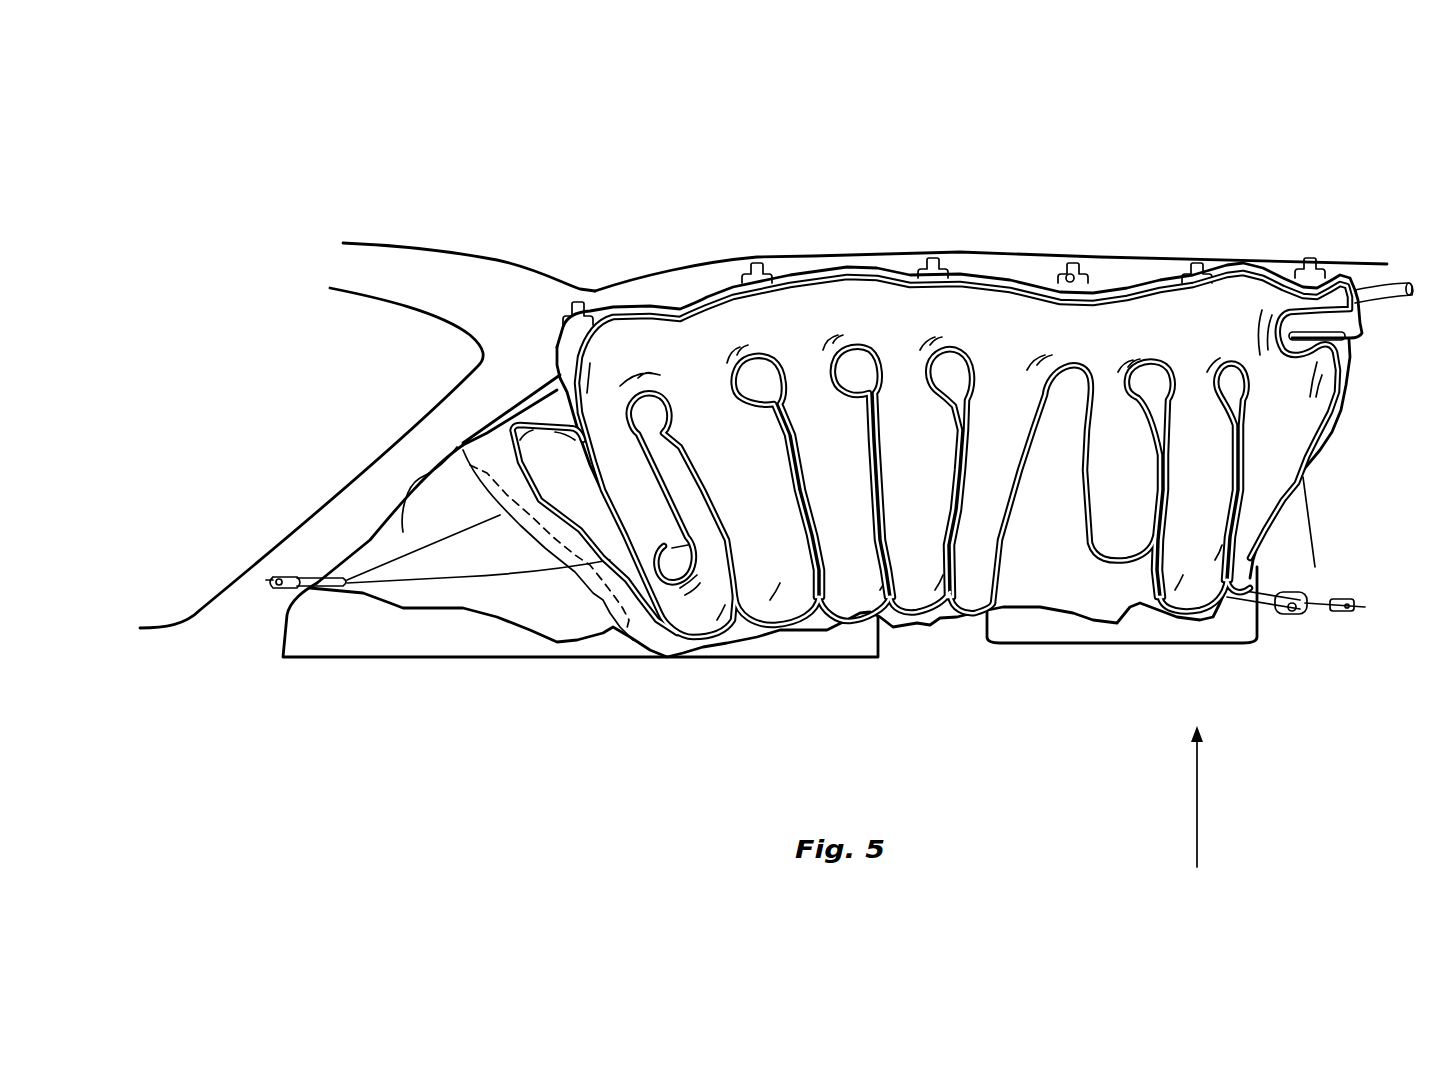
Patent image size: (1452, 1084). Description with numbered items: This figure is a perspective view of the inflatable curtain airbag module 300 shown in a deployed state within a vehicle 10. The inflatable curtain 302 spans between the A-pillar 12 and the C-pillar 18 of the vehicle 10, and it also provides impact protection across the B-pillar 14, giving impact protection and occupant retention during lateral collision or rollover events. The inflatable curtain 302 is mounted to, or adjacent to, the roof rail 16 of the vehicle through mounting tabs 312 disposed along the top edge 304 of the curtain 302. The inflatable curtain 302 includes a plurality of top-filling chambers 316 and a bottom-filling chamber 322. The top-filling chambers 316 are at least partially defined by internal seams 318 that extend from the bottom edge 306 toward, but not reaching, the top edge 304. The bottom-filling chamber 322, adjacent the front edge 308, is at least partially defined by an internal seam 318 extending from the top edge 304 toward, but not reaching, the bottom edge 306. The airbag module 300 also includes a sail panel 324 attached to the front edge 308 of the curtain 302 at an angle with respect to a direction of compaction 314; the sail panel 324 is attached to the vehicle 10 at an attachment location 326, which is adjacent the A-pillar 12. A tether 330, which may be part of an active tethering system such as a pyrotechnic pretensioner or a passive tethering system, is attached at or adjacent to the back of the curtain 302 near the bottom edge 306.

The vehicle 10 is at (250, 655).
The A-pillar 12 is at (438, 410).
The B-pillar 14 is at (937, 628).
The roof rail 16 is at (1008, 263).
The C-pillar 18 is at (1293, 520).
The inflatable curtain airbag module 300 is at (630, 238).
The inflatable curtain 302 is at (627, 645).
The top edge 304 is at (815, 272).
The bottom edge 306 is at (757, 650).
The front edge 308 is at (460, 478).
The mounting tabs 312 is at (1107, 262).
The direction of compaction 314 is at (1200, 800).
The top-filling chambers 316 is at (1207, 467).
The internal seams 318 is at (873, 480).
The bottom-filling chamber 322 is at (567, 503).
The sail panel 324 is at (403, 530).
The attachment location 326 is at (290, 578).
The tether 330 is at (1273, 603).